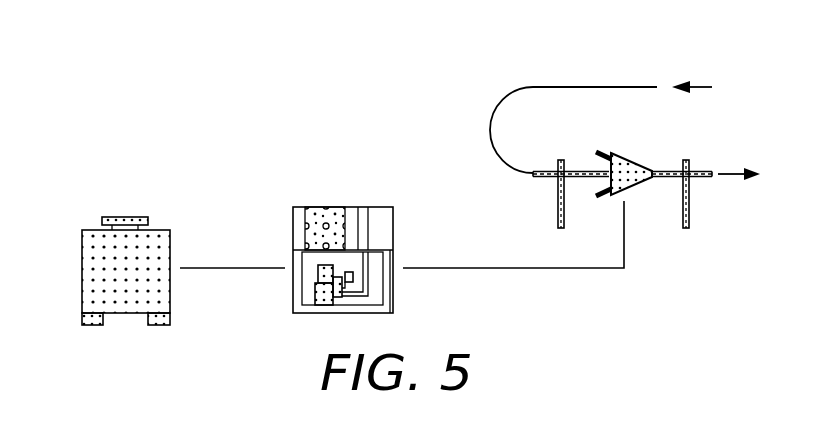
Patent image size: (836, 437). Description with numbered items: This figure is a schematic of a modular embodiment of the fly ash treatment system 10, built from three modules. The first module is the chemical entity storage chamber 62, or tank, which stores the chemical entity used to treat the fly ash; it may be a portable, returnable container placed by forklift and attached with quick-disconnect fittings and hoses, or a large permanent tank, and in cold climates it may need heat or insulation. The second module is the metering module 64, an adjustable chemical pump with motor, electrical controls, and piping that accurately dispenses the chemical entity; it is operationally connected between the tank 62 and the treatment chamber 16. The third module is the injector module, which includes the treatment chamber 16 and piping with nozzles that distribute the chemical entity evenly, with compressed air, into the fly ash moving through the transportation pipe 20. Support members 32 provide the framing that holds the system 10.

The fly ash treatment system 10 is at (298, 121).
The treatment chamber 16 is at (620, 165).
The transportation pipe 20 is at (543, 178).
The support members 32 is at (558, 215).
The chemical entity storage chamber 62 is at (158, 245).
The metering module 64 is at (302, 240).